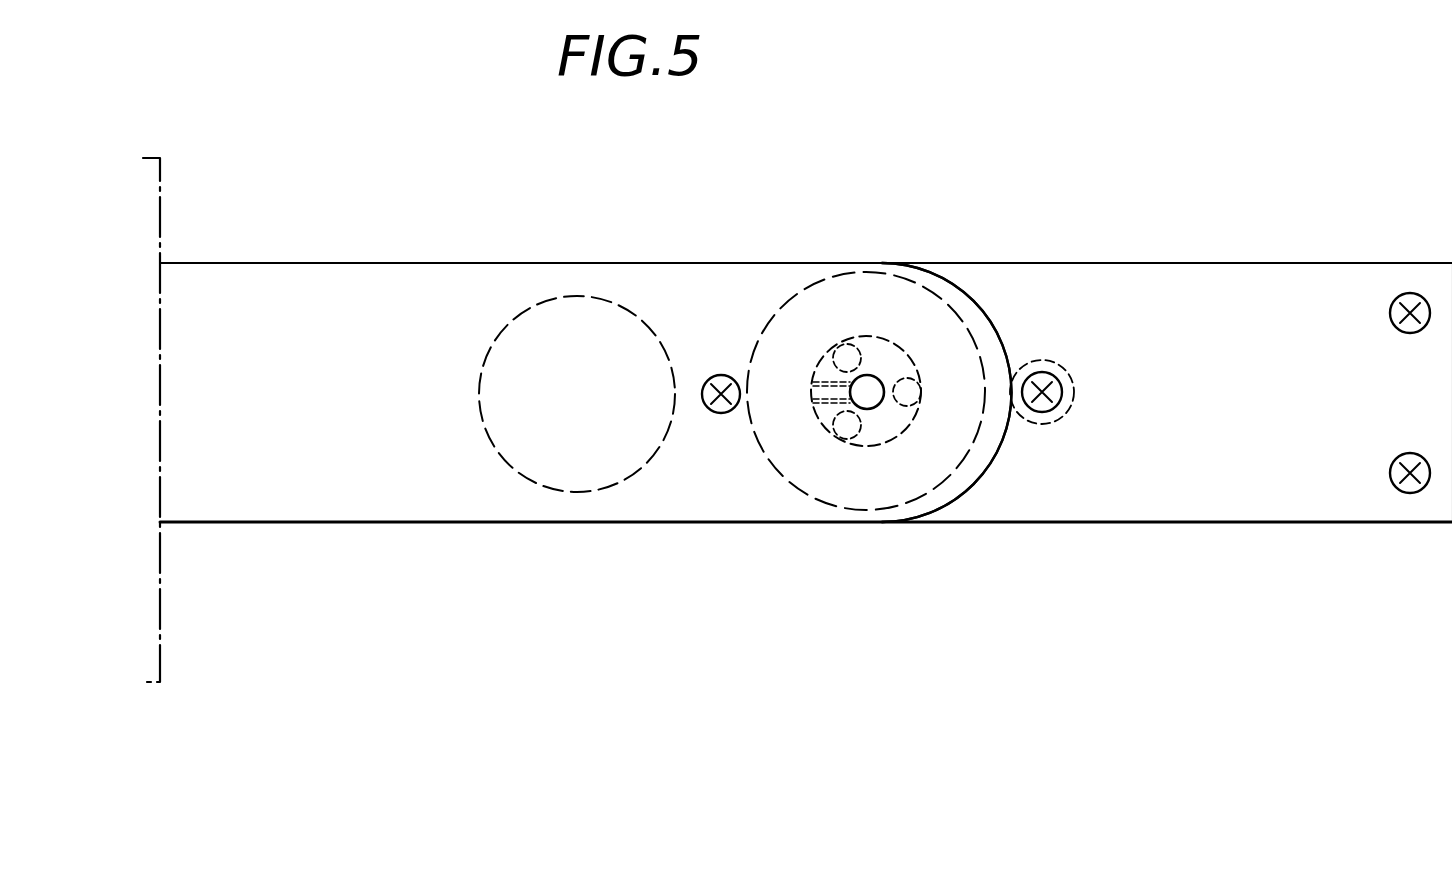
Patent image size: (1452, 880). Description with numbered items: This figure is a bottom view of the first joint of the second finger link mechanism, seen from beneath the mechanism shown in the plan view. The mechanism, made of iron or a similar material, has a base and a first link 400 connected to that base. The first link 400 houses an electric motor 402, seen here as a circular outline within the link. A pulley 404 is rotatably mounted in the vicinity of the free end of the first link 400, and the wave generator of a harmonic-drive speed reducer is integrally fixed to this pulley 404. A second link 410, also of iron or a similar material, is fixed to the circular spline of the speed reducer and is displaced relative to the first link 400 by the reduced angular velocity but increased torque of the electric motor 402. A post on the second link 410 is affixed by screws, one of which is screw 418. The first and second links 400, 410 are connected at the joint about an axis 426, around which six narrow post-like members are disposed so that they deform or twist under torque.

The first link 400 is at (460, 523).
The electric motor 402 is at (490, 353).
The pulley 404 is at (977, 313).
The second link 410 is at (1088, 526).
The screw 418 is at (1052, 376).
The axis of the joint 426 is at (867, 392).